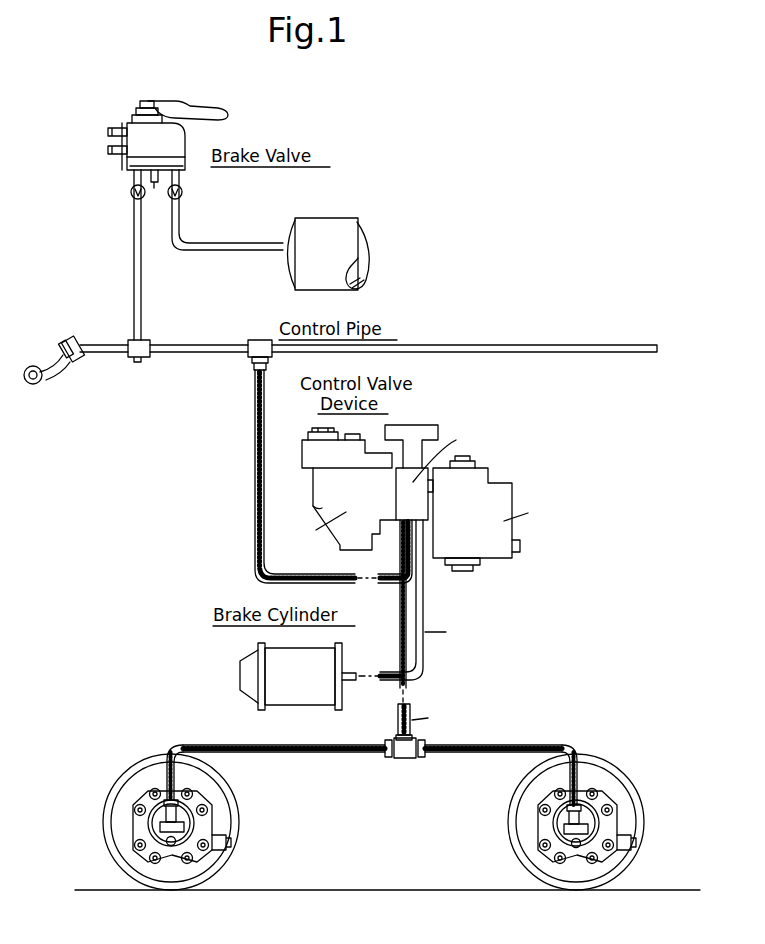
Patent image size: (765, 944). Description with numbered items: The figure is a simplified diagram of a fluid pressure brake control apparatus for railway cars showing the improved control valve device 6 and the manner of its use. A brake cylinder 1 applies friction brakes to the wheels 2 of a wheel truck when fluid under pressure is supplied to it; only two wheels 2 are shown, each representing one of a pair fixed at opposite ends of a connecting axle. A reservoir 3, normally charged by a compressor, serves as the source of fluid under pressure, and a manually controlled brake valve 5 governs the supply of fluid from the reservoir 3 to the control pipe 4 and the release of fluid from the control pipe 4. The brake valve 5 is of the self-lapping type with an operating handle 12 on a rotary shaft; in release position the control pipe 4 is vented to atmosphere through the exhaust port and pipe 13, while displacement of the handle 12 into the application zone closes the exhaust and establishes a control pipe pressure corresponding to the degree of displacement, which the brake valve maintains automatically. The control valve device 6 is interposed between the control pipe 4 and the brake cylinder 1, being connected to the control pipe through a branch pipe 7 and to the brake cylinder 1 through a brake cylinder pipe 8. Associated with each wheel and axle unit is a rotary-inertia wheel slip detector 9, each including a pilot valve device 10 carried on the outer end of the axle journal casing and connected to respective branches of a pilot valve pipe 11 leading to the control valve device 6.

The brake cylinder 1 is at (248, 671).
The wheels 2 is at (214, 858).
The reservoir 3 is at (340, 226).
The control pipe 4 is at (549, 351).
The brake valve 5 is at (125, 122).
The control valve device 6 is at (300, 447).
The branch pipe 7 is at (254, 398).
The brake cylinder pipe 8 is at (425, 600).
The wheel slip detector 9 is at (186, 816).
The pilot valve device 10 is at (165, 820).
The pilot valve pipe 11 is at (402, 653).
The operating handle 12 is at (215, 113).
The exhaust port and pipe 13 is at (155, 186).